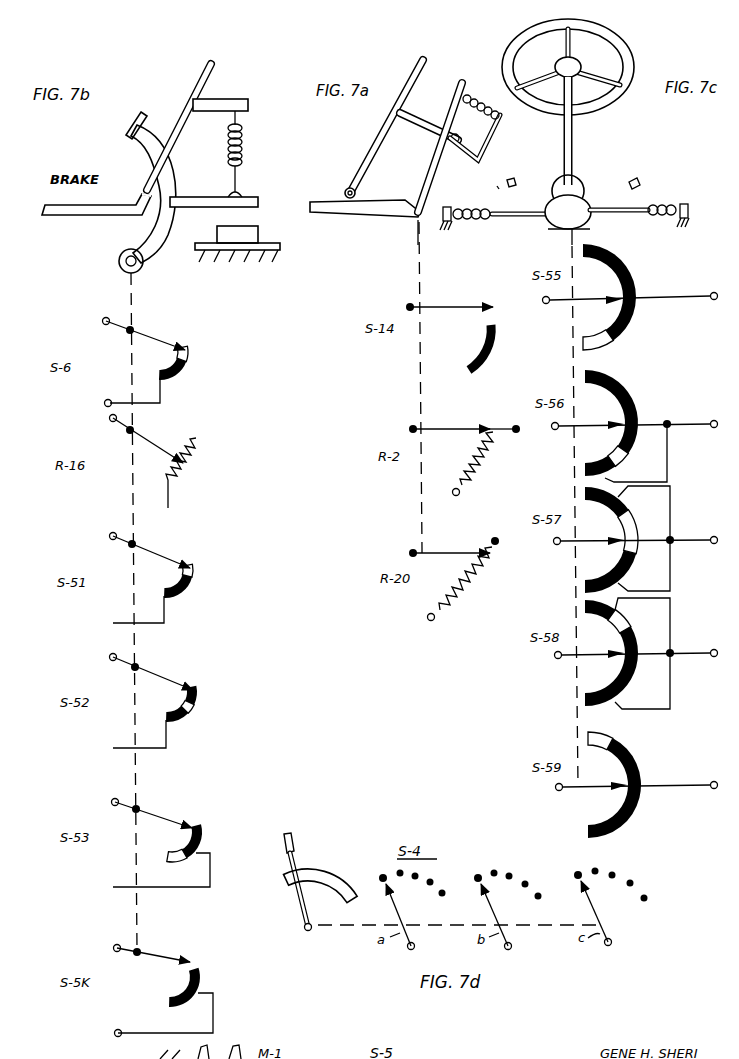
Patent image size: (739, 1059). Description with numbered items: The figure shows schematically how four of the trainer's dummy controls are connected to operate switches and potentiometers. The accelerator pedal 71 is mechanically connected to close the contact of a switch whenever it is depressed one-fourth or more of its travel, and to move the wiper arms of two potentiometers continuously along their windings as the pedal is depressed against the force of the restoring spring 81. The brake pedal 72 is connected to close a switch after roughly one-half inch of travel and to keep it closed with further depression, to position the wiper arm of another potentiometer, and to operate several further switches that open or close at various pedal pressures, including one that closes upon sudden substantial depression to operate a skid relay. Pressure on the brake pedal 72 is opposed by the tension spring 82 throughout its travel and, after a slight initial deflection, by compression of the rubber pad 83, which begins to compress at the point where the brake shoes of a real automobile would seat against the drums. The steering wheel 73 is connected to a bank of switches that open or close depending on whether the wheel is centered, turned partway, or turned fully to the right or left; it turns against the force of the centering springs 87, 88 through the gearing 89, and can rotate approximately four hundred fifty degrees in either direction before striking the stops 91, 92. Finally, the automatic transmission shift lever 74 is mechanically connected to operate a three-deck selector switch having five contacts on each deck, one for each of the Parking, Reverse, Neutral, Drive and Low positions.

In FIG. 7A, the accelerator pedal 71 is at (374, 147).
In FIG. 7B, the brake pedal 72 is at (131, 140).
In FIG. 7C, the steering wheel 73 is at (627, 58).
In FIG. 7D, the automatic transmission shift lever 74 is at (293, 843).
In FIG. 7A, the restoring spring 81 is at (479, 97).
In FIG. 7B, the tension spring 82 is at (248, 150).
In FIG. 7B, the rubber pad 83 is at (258, 238).
In FIG. 7A, the centering spring 87 is at (482, 220).
In FIG. 7C, the centering spring 88 is at (661, 220).
In FIG. 7C, the gearing 89 is at (581, 188).
In FIG. 7A, the stop 91 is at (511, 172).
In FIG. 7C, the stop 92 is at (641, 181).